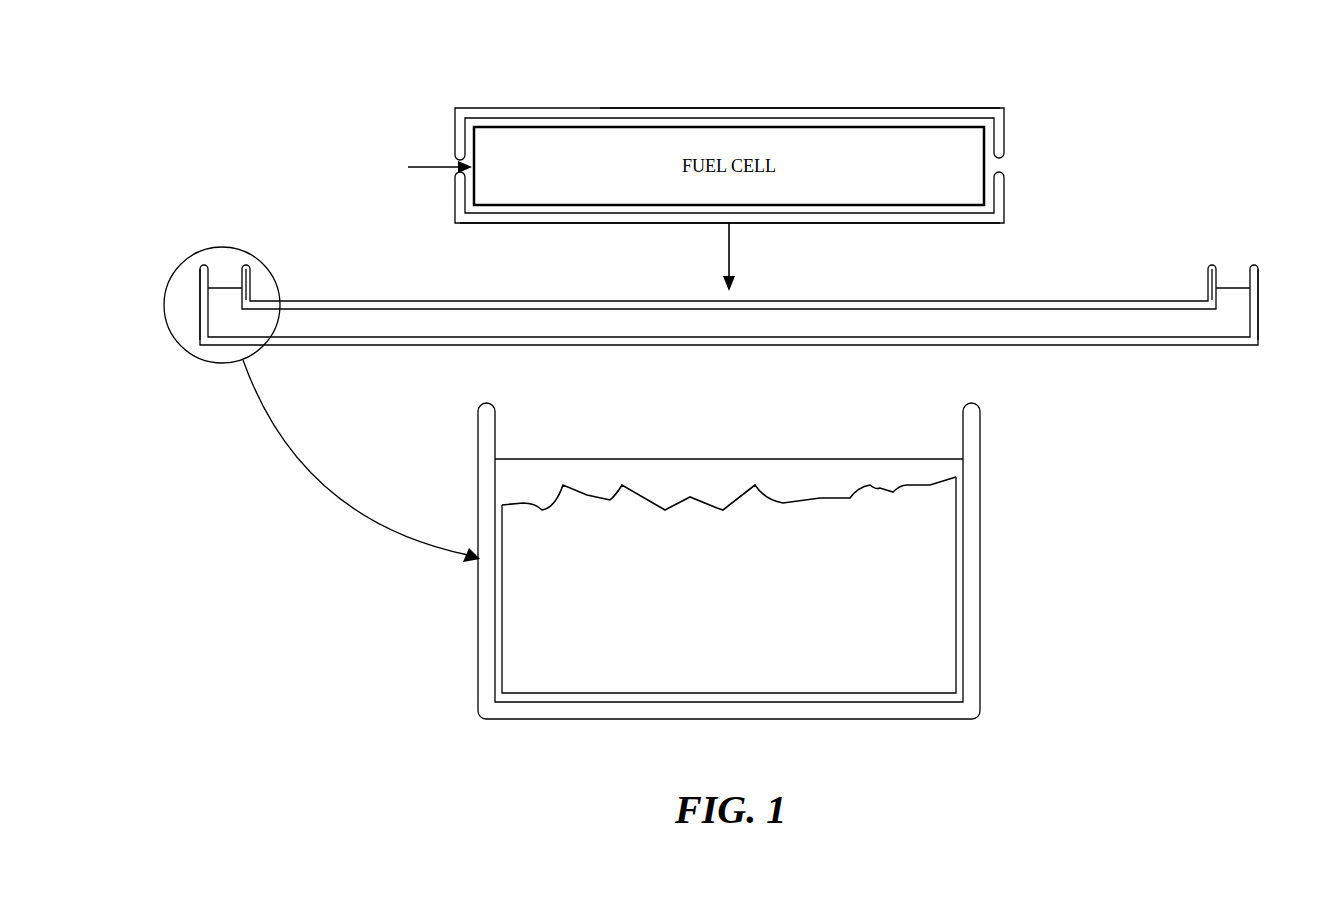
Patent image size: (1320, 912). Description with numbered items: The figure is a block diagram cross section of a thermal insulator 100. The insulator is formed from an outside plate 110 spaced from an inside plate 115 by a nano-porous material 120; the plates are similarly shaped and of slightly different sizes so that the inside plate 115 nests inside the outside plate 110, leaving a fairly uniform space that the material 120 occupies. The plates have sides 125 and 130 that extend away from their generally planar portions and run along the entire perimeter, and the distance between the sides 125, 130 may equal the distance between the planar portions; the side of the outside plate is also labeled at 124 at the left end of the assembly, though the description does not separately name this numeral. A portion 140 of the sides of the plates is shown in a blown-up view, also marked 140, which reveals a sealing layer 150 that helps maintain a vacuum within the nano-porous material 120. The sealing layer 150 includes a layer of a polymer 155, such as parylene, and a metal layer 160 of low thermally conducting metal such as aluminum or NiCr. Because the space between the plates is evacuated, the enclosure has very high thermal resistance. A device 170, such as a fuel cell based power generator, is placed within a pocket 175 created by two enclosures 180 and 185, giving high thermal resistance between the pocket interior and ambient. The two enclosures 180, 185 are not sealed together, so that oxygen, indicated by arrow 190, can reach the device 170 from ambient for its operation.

The thermal insulator 100 is at (1194, 66).
The outside plate 110 is at (445, 346).
The inside plate 115 is at (992, 301).
The nano-porous material 120 is at (890, 681).
The chamber sidewall 124 is at (204, 265).
The side of plate 125 is at (1255, 265).
The side of plate 130 is at (247, 265).
The portion of the sides of the plates 140 is at (165, 303).
The sealing layer 150 is at (1229, 286).
The polymer layer 155 is at (680, 506).
The metal layer 160 is at (716, 473).
The device 170 is at (986, 162).
The pocket 175 is at (866, 121).
The enclosure 180 is at (568, 224).
The enclosure 185 is at (735, 109).
The arrow indicating oxygen 190 is at (441, 161).